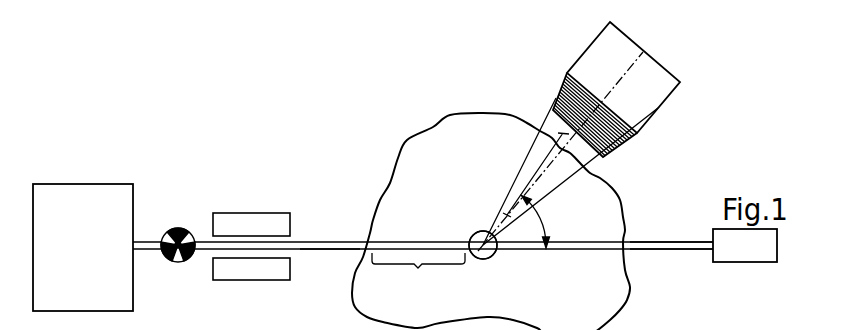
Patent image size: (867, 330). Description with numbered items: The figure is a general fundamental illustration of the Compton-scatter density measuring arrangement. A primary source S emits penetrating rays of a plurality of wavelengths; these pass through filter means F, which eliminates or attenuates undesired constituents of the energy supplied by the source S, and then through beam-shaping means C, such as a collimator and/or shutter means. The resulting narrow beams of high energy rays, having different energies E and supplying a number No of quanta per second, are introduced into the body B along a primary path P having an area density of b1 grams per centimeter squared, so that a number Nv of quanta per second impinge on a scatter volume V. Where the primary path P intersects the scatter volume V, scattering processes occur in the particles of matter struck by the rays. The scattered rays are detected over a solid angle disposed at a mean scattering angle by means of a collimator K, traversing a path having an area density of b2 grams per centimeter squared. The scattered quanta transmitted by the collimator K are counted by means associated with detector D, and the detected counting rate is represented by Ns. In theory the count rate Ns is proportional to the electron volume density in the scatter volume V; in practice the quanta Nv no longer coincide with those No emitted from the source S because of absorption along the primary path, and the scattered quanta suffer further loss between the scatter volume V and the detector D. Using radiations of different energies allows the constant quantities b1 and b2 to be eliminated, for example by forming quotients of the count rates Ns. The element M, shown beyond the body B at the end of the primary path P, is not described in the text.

The primary source S is at (78, 184).
The filter means F is at (171, 228).
The beam-shaping means C is at (256, 224).
The ray energy E is at (423, 231).
The number of emitted quanta per second No is at (330, 268).
The body B is at (604, 314).
The scatter volume V is at (491, 259).
The number of quanta impinging on scatter volume Nv is at (471, 227).
The area density of primary path b1 is at (418, 275).
The area density of scattered-ray path b2 is at (521, 170).
The count rate Ns is at (643, 52).
The detector D is at (662, 90).
The collimator K is at (617, 133).
The primary path P is at (663, 249).
The transmission measuring device M is at (777, 245).